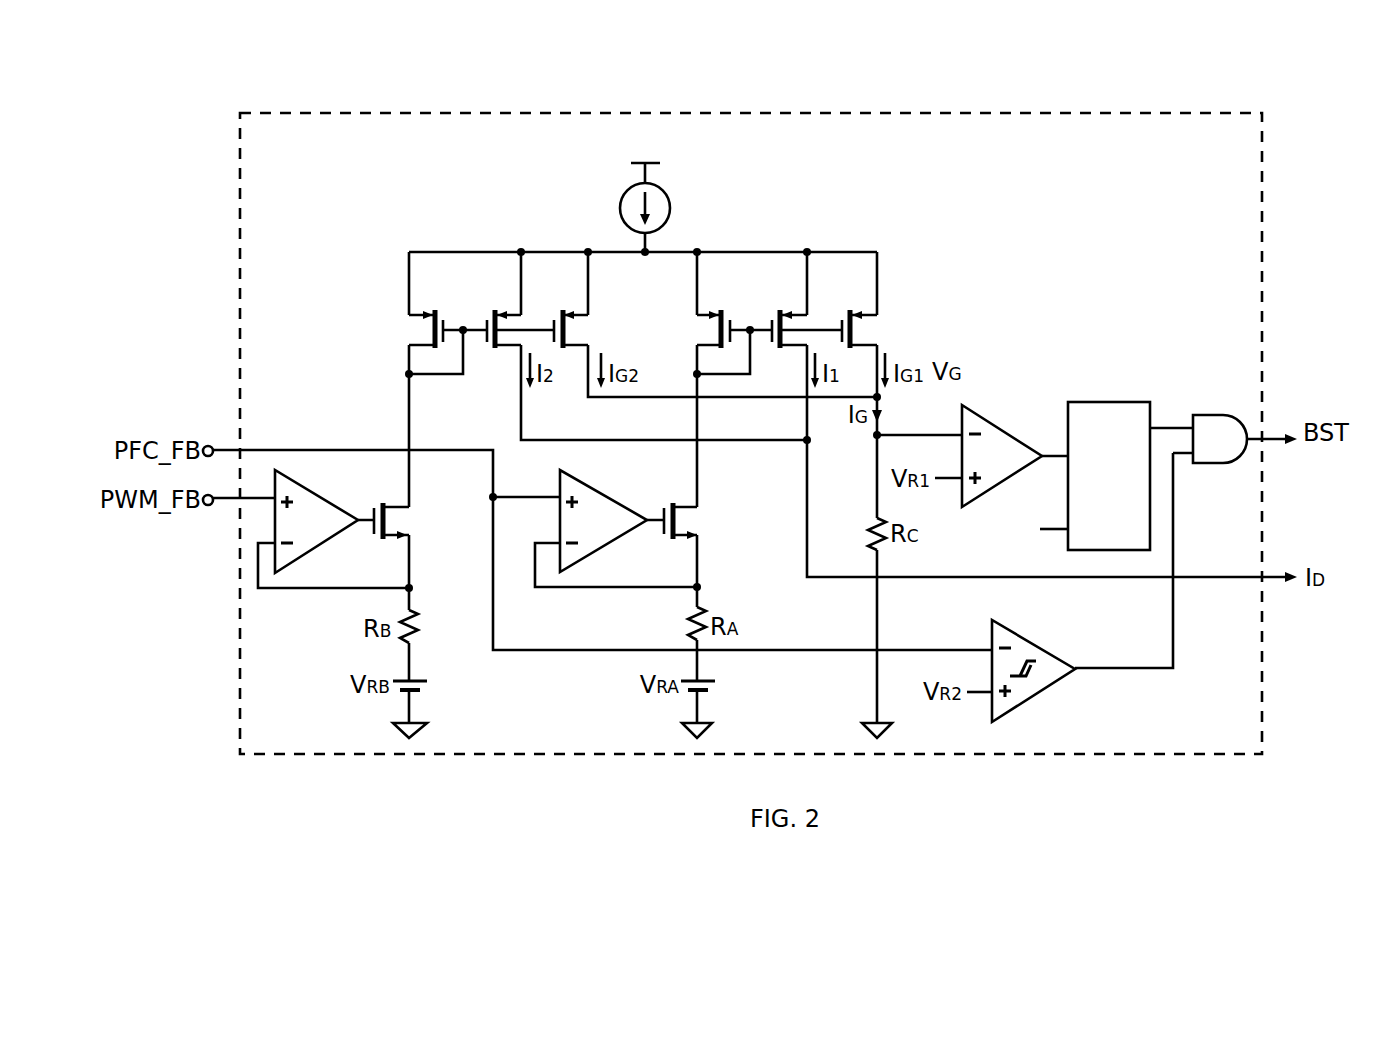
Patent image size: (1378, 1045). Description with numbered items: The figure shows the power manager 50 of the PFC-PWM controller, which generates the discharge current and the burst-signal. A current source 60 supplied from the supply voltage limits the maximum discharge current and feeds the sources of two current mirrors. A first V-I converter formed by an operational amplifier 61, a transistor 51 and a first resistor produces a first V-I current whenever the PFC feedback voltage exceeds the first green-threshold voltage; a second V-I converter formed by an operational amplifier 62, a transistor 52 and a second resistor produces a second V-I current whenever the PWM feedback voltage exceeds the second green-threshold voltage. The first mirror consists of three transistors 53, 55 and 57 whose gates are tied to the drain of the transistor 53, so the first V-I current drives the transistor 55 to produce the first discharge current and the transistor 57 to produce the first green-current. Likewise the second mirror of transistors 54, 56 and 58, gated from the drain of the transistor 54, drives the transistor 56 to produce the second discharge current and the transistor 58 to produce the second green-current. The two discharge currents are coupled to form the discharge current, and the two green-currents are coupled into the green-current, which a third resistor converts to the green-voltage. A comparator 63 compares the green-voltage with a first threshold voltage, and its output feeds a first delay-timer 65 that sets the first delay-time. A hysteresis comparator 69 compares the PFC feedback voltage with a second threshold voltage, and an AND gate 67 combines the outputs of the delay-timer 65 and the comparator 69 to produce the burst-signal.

The power manager 50 is at (1180, 112).
The transistor 51 is at (700, 521).
The transistor 52 is at (412, 520).
The transistor 53 is at (697, 330).
The transistor 54 is at (407, 330).
The transistor 55 is at (776, 312).
The transistor 56 is at (503, 355).
The transistor 57 is at (873, 328).
The transistor 58 is at (592, 328).
The current source 60 is at (672, 206).
The operational amplifier 61 is at (602, 557).
The operational amplifier 62 is at (310, 558).
The comparator 63 is at (992, 418).
The first delay-timer 65 is at (1107, 401).
The AND gate 67 is at (1205, 413).
The hysteresis comparator 69 is at (1038, 641).